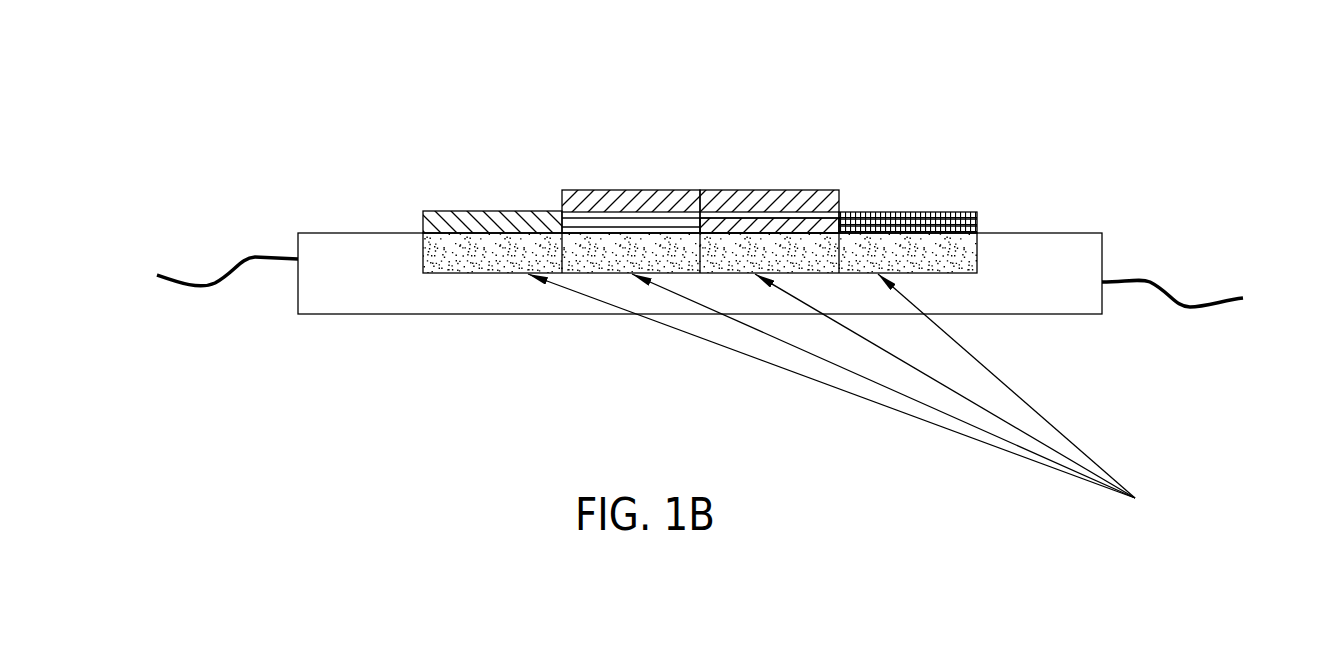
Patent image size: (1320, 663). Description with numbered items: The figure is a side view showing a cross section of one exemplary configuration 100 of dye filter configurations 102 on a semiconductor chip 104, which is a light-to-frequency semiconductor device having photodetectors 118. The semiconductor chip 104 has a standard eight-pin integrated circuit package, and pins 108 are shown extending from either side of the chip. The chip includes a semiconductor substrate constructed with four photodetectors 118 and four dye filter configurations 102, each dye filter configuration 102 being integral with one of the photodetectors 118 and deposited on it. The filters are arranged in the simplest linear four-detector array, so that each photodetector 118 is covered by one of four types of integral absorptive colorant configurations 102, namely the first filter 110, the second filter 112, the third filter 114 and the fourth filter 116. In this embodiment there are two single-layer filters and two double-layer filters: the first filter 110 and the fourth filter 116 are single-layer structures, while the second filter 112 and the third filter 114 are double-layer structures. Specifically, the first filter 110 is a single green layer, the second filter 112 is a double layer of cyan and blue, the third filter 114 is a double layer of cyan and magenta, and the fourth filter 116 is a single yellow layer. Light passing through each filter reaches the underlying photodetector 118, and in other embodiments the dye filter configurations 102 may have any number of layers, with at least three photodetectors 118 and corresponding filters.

The configuration 100 is at (190, 102).
The dye filter configuration 102 is at (751, 178).
The semiconductor chip 104 is at (1068, 318).
The pin 108 is at (179, 270).
The filter F1 110 is at (494, 292).
The filter F2 112 is at (632, 190).
The filter F3 114 is at (769, 262).
The filter F4 116 is at (910, 292).
The photodetectors 118 is at (1135, 498).